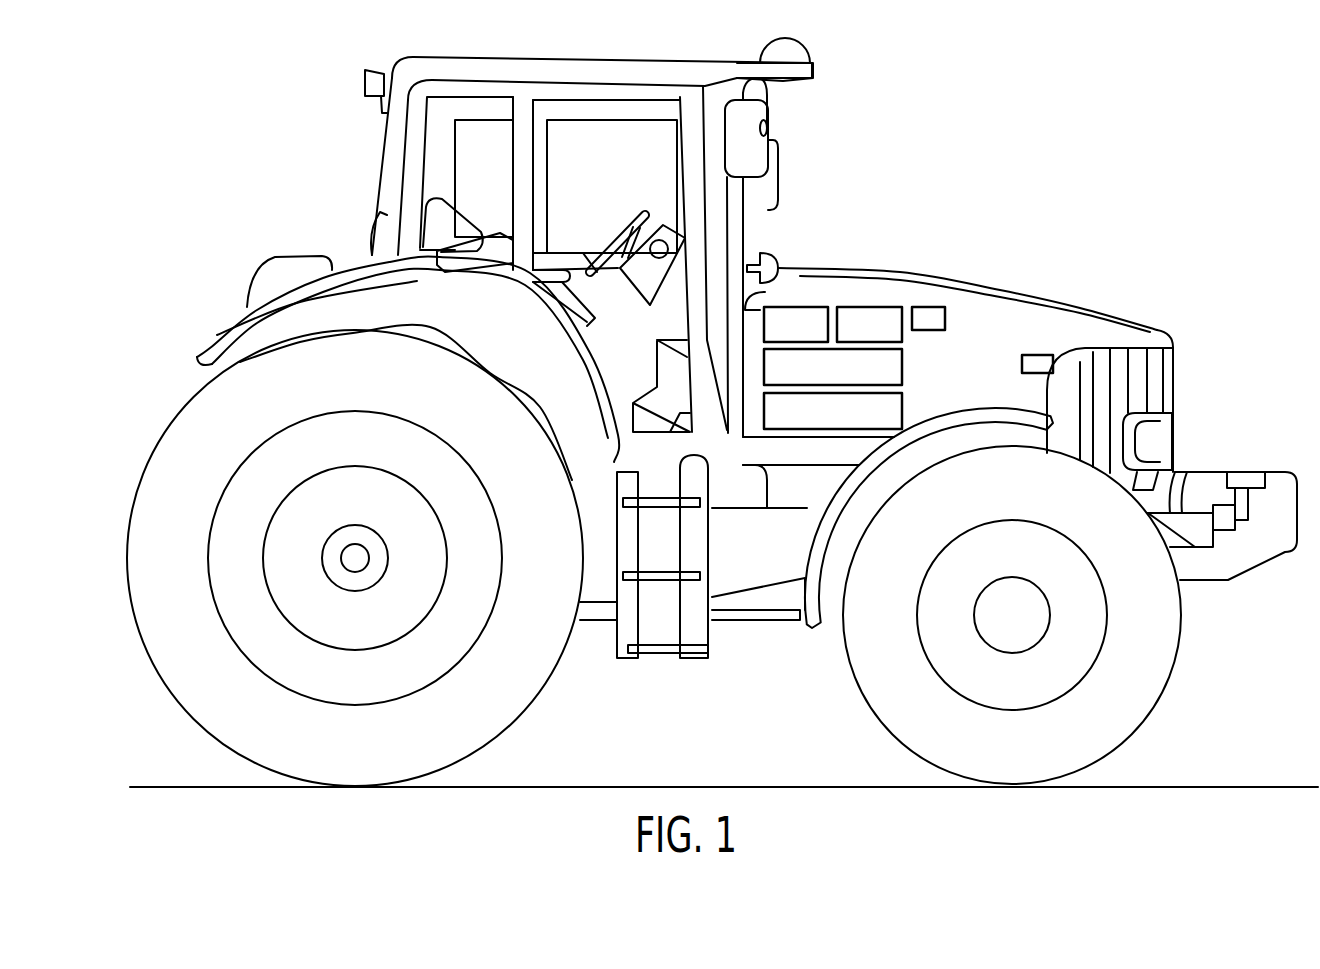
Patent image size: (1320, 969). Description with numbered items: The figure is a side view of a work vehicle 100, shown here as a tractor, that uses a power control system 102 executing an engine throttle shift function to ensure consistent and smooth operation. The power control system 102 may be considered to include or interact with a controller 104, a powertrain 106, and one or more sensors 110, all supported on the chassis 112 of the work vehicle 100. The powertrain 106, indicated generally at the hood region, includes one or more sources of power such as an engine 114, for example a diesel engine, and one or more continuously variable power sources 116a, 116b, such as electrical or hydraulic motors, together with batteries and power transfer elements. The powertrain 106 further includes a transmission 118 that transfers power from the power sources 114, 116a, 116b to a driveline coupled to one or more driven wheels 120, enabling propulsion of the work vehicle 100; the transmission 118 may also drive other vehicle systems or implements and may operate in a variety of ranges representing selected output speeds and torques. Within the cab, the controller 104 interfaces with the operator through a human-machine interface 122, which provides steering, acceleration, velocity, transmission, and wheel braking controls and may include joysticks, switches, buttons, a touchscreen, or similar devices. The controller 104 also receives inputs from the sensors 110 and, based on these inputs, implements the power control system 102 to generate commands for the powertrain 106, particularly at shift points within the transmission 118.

The work vehicle 100 is at (278, 205).
The power control system 102 is at (1098, 302).
The controller 104 is at (930, 307).
The powertrain 106 is at (973, 295).
The sensors 110 is at (1037, 353).
The chassis 112 is at (753, 597).
The engine 114 is at (850, 381).
The continuously variable power source 116a is at (820, 337).
The continuously variable power source 116b is at (894, 337).
The transmission 118 is at (850, 424).
The driven wheels 120 is at (172, 640).
The human-machine interface 122 is at (663, 225).